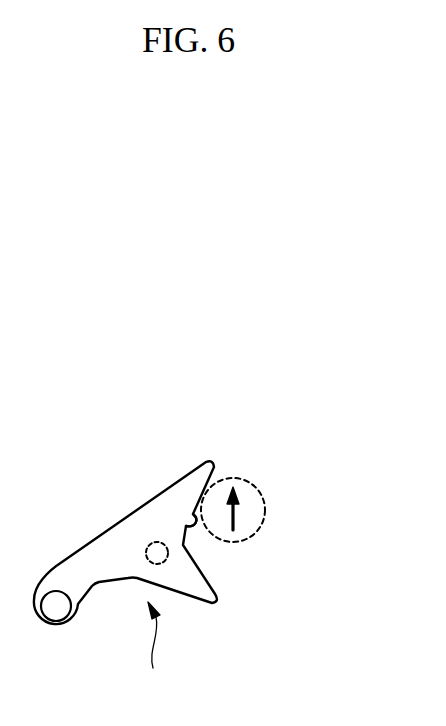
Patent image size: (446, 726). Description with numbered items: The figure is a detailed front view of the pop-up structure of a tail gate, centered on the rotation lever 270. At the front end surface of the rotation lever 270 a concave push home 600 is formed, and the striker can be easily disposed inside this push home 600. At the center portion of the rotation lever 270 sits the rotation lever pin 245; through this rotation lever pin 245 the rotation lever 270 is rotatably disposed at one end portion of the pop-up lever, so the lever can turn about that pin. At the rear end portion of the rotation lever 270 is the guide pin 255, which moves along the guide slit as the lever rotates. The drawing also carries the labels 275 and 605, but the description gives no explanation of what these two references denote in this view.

The pin hole 245 is at (149, 545).
The pivot hole 255 is at (55, 606).
The rotation direction of lever 270 is at (155, 650).
The movement direction indicator 275 is at (266, 503).
The hook protrusion 600 is at (183, 522).
The lever arm 605 is at (179, 481).